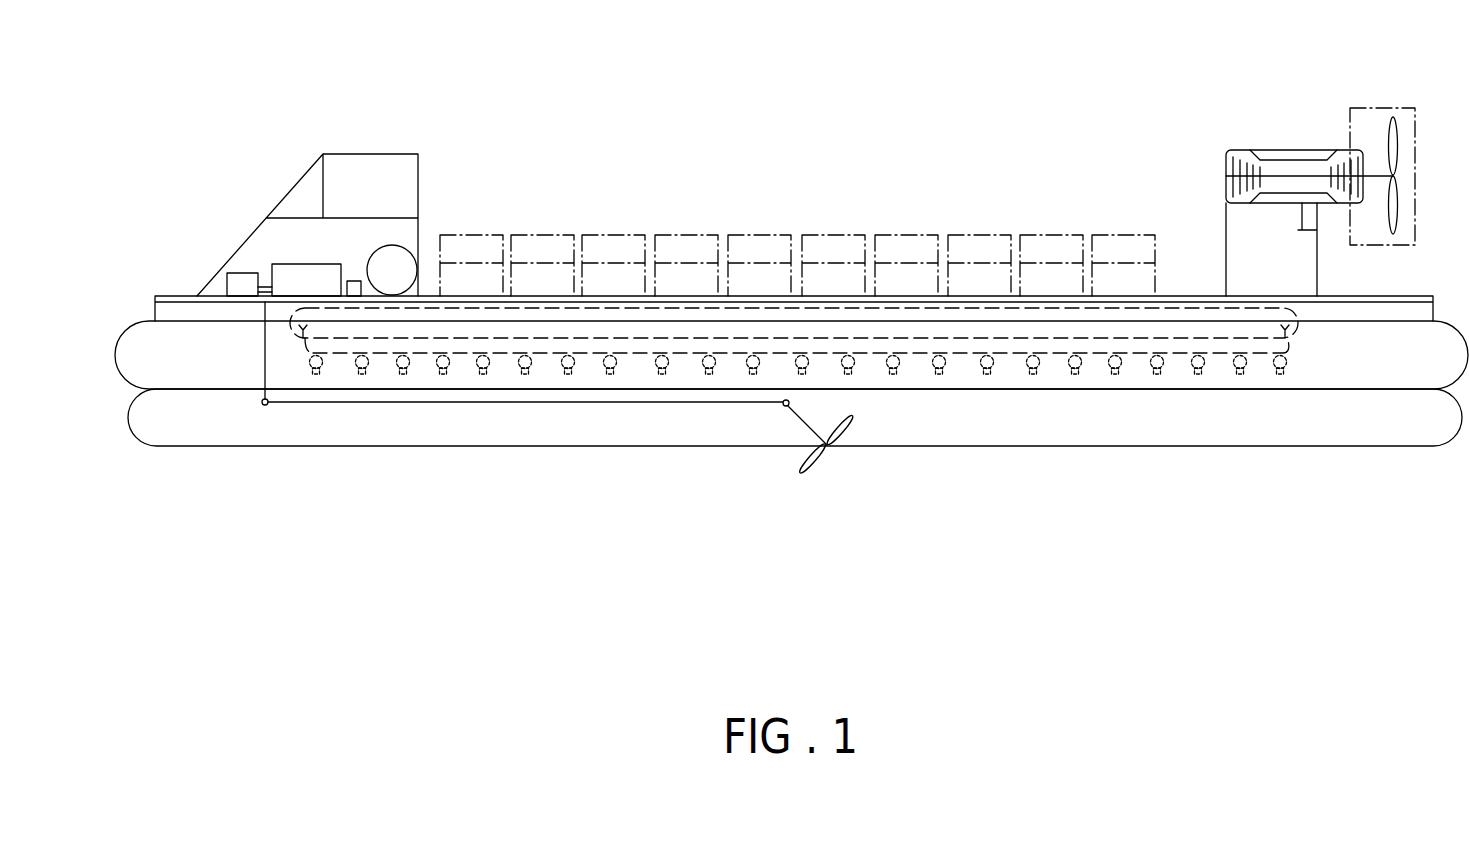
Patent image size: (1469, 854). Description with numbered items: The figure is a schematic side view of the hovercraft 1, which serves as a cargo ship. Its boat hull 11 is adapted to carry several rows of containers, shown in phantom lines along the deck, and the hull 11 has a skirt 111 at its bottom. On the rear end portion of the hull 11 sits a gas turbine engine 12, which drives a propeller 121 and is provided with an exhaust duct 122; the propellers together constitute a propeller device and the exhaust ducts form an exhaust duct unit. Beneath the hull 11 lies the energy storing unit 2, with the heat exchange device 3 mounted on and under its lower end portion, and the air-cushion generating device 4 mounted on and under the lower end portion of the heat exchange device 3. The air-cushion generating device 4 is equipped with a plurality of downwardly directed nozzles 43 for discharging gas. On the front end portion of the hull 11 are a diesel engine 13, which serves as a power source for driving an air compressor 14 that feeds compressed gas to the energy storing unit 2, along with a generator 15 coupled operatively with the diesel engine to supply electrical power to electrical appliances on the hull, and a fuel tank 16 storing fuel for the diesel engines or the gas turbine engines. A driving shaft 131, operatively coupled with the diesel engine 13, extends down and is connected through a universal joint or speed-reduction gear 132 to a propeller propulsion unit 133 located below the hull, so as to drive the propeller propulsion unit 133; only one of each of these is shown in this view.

The hovercraft 1 is at (791, 200).
The energy storing unit 2 is at (1297, 318).
The heat exchange device 3 is at (1300, 352).
The air-cushion generating device 4 is at (1292, 370).
The nozzles 43 is at (1074, 374).
The boat hull 11 is at (177, 296).
The skirt 111 is at (1442, 433).
The gas turbine engine 12 is at (1265, 150).
The propeller 121 is at (1385, 108).
The exhaust duct 122 is at (1300, 222).
The diesel engine 13 is at (286, 268).
The air compressor 14 is at (358, 283).
The generator 15 is at (243, 283).
The fuel tank 16 is at (403, 262).
The driving shaft 131 is at (264, 358).
The universal joint or speed-reduction gear 132 is at (785, 406).
The propeller propulsion unit 133 is at (812, 462).